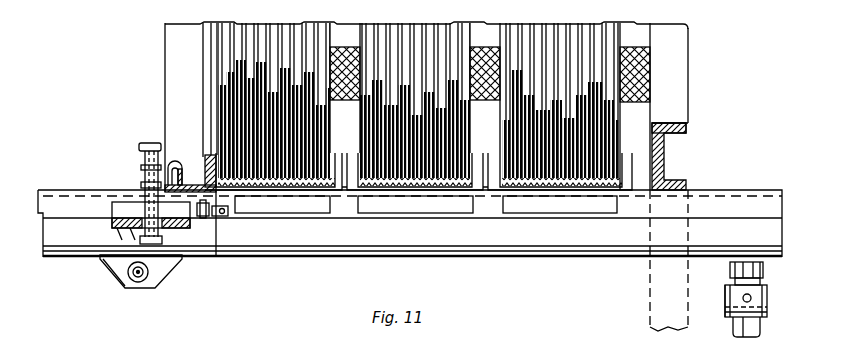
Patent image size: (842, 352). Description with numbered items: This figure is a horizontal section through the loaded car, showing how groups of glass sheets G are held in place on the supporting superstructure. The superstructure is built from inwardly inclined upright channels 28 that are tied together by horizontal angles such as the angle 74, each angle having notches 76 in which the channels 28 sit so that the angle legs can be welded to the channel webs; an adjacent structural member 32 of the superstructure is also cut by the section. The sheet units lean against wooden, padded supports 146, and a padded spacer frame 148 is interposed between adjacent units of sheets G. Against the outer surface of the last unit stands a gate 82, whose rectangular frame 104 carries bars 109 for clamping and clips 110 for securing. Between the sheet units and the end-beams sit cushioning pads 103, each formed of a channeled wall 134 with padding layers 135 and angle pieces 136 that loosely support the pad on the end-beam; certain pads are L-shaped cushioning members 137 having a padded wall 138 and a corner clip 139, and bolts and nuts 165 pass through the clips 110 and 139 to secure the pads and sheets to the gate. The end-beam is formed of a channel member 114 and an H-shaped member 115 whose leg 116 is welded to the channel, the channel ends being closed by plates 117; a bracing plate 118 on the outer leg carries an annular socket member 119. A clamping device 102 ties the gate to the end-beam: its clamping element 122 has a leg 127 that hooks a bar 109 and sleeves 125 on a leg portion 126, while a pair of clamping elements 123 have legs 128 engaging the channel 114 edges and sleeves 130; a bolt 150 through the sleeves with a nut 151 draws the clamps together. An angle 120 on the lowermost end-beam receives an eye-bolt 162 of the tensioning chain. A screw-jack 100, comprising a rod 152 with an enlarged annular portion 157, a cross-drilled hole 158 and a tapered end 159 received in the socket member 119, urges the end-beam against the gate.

The gate 82 is at (192, 43).
The rectangular frame 104 is at (180, 61).
The glass sheets G is at (258, 90).
The spacer frame 148 is at (347, 50).
The support 146 is at (608, 84).
The angle 74 is at (668, 87).
The notch 76 is at (668, 118).
The channel 28 is at (680, 128).
The angle bracket 32 is at (663, 155).
The bar 109 is at (173, 168).
The leg 127 is at (178, 178).
The wall 138 is at (304, 191).
The L-shaped cushioning member 137 is at (300, 183).
The cushioning pad 103 is at (357, 194).
The channeled wall 134 is at (400, 184).
The padding layer 135 is at (413, 184).
The angle piece 136 is at (442, 203).
The channel member 114 is at (58, 202).
The plate 117 is at (39, 222).
The H-shaped member 115 is at (58, 237).
The leg 116 is at (80, 247).
The bracing plate 118 is at (513, 257).
The clamping element 122 is at (135, 168).
The leg portion 126 is at (159, 147).
The bolt 150 is at (146, 144).
The sleeve 125 is at (142, 167).
The clamping device 102 is at (136, 185).
The sleeve 130 is at (168, 262).
The angle 120 is at (122, 288).
The nut 151 is at (147, 281).
The eye-bolt 162 is at (138, 284).
The clamping element 123 is at (125, 233).
The leg 128 is at (133, 230).
The clip 110 is at (204, 216).
The bolt and nut 165 is at (222, 214).
The clip 139 is at (216, 193).
The tapered end 159 is at (763, 274).
The annular socket member 119 is at (735, 268).
The cross-drilled hole 158 is at (767, 292).
The enlarged annular portion 157 is at (767, 308).
The rod 152 is at (760, 332).
The screw-jack 100 is at (723, 318).